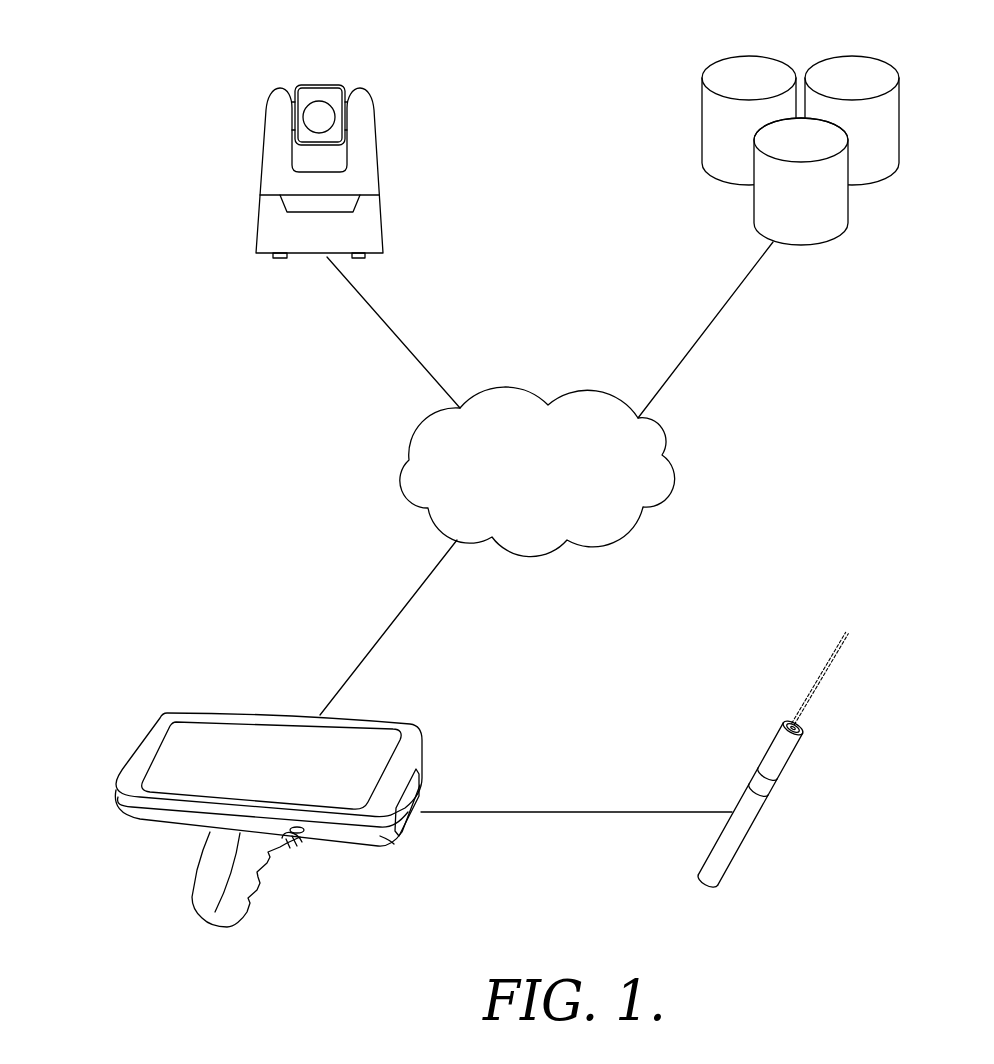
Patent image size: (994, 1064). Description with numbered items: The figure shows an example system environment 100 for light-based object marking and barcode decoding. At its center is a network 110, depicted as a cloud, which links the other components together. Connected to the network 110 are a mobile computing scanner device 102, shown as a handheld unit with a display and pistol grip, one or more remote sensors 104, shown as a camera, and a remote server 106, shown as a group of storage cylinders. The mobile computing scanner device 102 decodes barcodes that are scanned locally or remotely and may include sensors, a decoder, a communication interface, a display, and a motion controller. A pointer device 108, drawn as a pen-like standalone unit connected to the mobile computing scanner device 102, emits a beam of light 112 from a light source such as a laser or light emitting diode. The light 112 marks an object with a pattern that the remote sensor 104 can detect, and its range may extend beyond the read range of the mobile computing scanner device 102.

The system environment 100 is at (112, 70).
The mobile computing scanner device 102 is at (250, 711).
The remote sensor 104 is at (362, 96).
The remote server 106 is at (875, 56).
The pointer device 108 is at (752, 826).
The network 110 is at (507, 388).
The light 112 is at (827, 675).